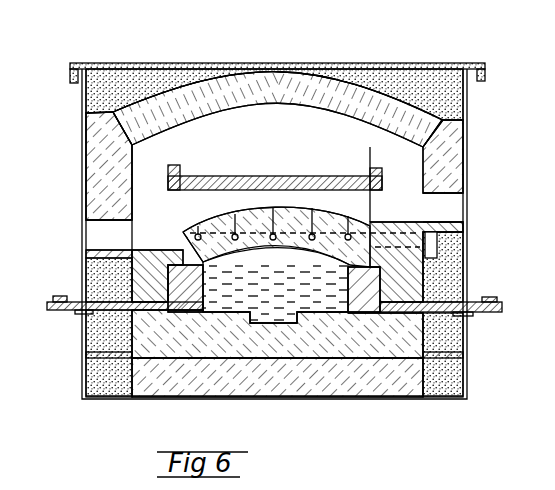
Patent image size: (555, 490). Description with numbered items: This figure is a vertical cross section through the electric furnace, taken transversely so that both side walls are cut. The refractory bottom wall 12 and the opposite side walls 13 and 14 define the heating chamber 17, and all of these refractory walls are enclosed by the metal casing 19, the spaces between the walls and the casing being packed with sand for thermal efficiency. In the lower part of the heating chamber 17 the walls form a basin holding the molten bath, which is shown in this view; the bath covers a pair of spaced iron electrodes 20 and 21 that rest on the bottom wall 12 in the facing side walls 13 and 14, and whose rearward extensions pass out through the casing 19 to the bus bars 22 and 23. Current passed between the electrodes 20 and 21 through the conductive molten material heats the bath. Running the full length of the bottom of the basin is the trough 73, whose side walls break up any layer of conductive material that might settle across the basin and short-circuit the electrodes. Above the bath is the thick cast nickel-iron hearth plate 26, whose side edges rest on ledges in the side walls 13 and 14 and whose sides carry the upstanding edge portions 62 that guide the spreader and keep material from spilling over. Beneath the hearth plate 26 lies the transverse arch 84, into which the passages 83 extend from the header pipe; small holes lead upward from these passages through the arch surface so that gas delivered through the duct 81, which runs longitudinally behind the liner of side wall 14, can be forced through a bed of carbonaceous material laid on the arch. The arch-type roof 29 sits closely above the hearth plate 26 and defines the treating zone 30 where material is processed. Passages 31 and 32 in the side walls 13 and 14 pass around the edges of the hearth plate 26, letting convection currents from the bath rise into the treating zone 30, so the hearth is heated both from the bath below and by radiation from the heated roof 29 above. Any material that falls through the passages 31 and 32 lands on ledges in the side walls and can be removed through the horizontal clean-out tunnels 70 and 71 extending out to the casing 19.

The bottom wall 12 is at (390, 352).
The side wall 13 is at (93, 179).
The side wall 14 is at (458, 179).
The heating chamber 17 is at (288, 286).
The metal casing 19 is at (467, 113).
The electrode 20 is at (203, 296).
The electrode 21 is at (354, 294).
The bus bar 22 is at (56, 298).
The bus bar 23 is at (492, 299).
The hearth plate 26 is at (305, 180).
The roof 29 is at (285, 80).
The treating zone 30 is at (288, 153).
The passage 31 is at (160, 217).
The passage 32 is at (404, 211).
The upstanding edge portion 62 is at (180, 172).
The clean-out tunnel 70 is at (95, 239).
The clean-out tunnel 71 is at (452, 210).
The trough 73 is at (278, 318).
The duct 81 is at (437, 245).
The passage 83 is at (348, 232).
The arch 84 is at (284, 251).